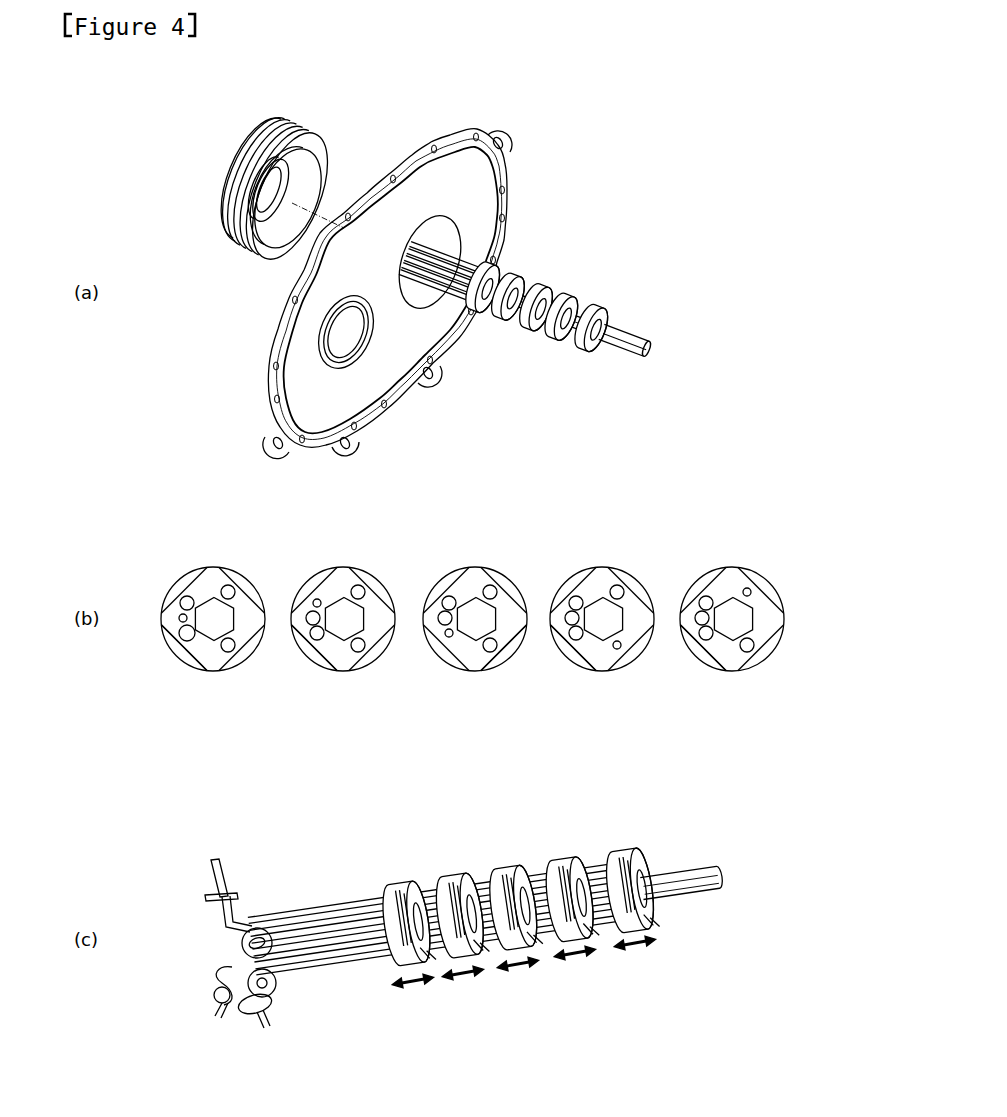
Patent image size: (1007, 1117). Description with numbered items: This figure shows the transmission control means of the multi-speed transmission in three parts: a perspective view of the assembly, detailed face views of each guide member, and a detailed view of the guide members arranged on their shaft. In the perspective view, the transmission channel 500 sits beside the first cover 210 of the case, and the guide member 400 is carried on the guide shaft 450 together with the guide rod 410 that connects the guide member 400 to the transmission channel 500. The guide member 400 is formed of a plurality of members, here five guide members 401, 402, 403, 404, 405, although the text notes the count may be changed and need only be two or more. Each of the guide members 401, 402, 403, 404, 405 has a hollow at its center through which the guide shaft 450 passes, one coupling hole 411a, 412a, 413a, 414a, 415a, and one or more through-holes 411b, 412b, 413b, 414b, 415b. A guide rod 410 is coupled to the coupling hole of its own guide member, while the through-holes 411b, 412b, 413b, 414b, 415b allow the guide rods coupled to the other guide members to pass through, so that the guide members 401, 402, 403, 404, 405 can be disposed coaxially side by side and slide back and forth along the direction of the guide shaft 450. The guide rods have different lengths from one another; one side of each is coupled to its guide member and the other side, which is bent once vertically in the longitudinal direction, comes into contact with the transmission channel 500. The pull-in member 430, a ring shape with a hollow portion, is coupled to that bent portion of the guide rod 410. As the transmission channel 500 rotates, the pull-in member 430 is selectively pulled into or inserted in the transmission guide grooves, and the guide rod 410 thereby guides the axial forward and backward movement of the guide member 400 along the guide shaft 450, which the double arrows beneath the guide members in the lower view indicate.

The first cover 210 is at (428, 147).
The transmission channel 500 is at (237, 165).
The guide member 400 is at (552, 279).
The guide rod 410 is at (458, 300).
The guide shaft 450 is at (631, 337).
The pull-in member 430 is at (283, 980).
The first guide member 401 is at (190, 567).
The second guide member 402 is at (320, 567).
The third guide member 403 is at (452, 567).
The fourth guide member 404 is at (580, 567).
The fifth guide member 405 is at (710, 567).
The coupling hole 411a is at (182, 614).
The through-hole 411b is at (192, 655).
The coupling hole 412a is at (316, 600).
The through-hole 412b is at (332, 660).
The coupling hole 413a is at (447, 637).
The through-hole 413b is at (473, 648).
The coupling hole 414a is at (583, 660).
The through-hole 414b is at (617, 652).
The coupling hole 415a is at (751, 588).
The through-hole 415b is at (738, 660).